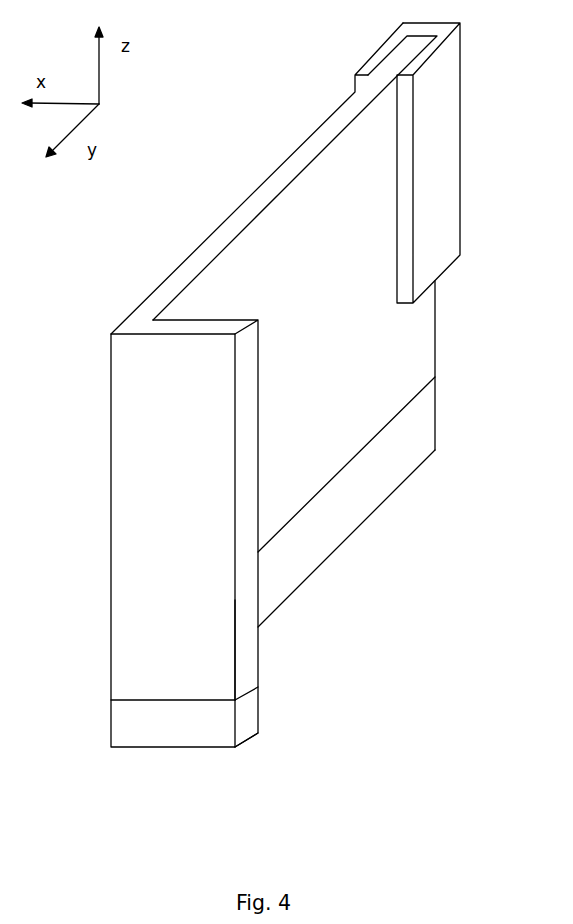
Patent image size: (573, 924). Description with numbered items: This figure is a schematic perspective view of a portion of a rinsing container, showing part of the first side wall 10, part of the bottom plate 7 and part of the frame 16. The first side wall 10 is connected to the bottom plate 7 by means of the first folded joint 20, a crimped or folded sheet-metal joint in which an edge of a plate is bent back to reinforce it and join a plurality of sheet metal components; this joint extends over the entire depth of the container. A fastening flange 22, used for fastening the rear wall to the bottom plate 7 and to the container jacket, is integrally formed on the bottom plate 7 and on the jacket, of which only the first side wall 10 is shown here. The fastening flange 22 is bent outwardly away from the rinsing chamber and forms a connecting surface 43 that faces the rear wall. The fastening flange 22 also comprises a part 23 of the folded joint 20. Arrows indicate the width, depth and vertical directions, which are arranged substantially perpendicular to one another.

The first side wall 10 is at (288, 224).
The frame 16 is at (443, 130).
The first folded joint 20 is at (337, 475).
The bottom plate 7 is at (322, 545).
The fastening flange 22 is at (244, 648).
The part of the folded joint 23 is at (145, 699).
The connecting surface 43 is at (184, 550).